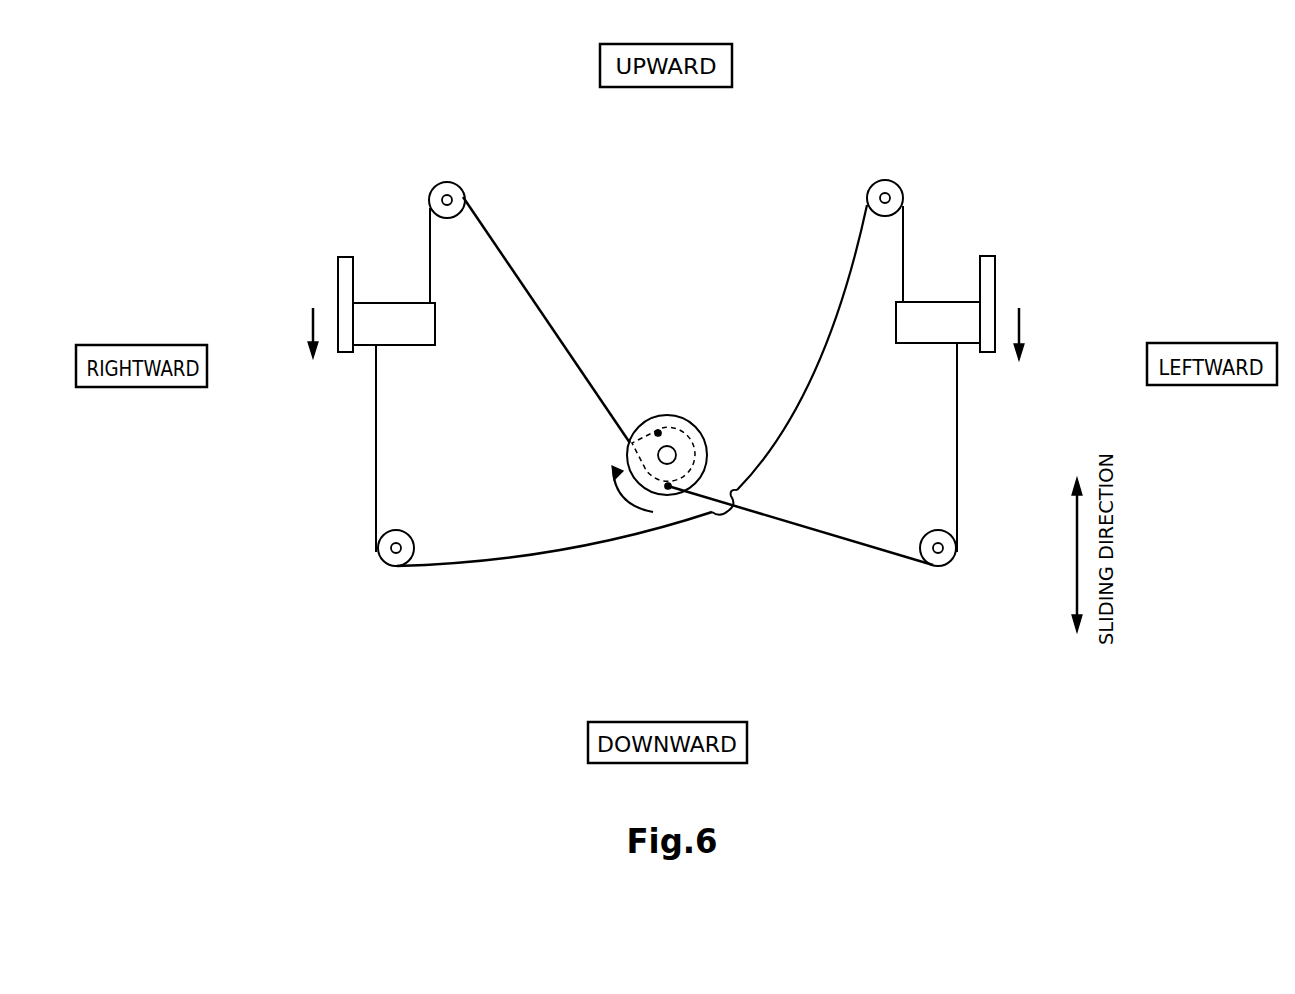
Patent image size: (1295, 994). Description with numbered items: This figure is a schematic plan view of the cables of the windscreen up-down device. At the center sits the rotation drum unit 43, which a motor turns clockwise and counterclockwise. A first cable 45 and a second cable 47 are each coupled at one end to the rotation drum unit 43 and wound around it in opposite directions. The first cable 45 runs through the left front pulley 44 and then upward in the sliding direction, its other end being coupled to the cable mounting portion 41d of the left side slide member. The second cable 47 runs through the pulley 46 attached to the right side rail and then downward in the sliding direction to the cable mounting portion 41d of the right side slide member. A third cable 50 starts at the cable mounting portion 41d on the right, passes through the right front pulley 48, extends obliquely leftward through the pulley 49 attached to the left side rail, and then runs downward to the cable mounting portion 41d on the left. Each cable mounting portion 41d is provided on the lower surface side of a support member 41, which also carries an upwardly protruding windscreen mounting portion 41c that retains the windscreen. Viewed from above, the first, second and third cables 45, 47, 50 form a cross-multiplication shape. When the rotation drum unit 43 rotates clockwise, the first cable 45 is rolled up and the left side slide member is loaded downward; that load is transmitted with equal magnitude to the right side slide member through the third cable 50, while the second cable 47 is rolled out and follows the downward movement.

The support member 41 is at (675, 301).
The windscreen mounting portion 41c is at (342, 283).
The cable mounting portion 41d is at (370, 337).
The rotation drum unit 43 is at (655, 414).
The pulley 44 is at (943, 559).
The first cable 45 is at (840, 538).
The pulley 46 is at (447, 181).
The second cable 47 is at (523, 280).
The pulley 48 is at (392, 568).
The pulley 49 is at (884, 179).
The third cable 50 is at (570, 545).